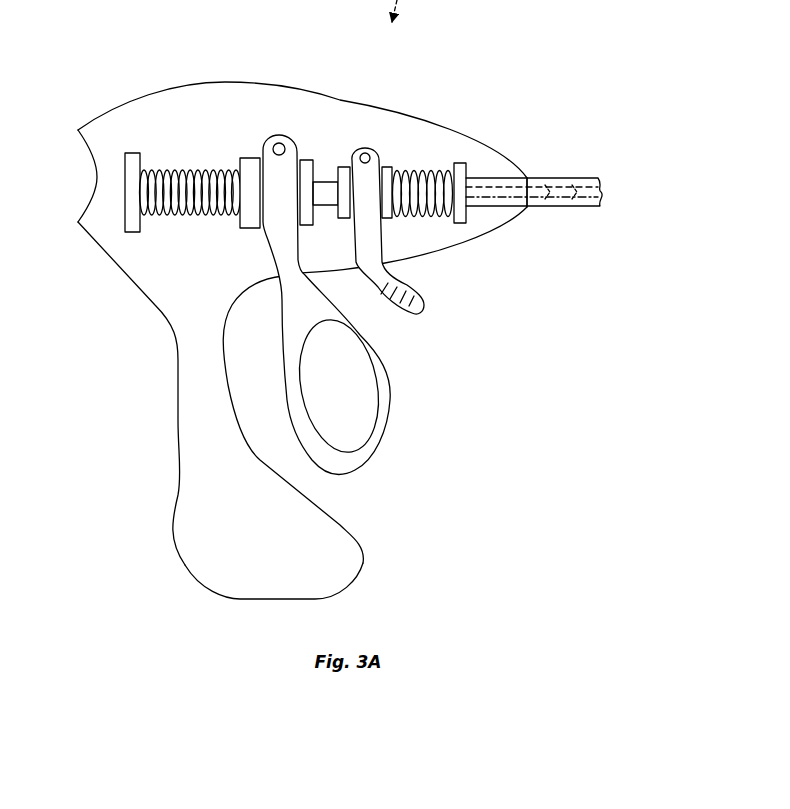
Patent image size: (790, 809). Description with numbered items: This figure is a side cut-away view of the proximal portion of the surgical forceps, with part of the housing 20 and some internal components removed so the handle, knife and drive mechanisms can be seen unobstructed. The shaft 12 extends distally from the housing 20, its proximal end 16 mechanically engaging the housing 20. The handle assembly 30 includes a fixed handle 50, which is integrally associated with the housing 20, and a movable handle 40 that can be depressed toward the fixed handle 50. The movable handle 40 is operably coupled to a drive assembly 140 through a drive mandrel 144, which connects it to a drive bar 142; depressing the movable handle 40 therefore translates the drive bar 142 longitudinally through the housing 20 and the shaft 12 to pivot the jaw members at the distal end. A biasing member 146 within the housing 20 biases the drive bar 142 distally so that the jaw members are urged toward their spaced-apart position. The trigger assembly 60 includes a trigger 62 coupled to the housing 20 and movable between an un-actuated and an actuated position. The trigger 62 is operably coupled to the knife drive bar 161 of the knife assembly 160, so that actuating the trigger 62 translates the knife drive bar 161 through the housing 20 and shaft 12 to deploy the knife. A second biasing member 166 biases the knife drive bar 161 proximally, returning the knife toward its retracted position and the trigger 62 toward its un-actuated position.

The shaft 12 is at (586, 208).
The proximal end 16 is at (541, 208).
The housing 20 is at (262, 82).
The handle assembly 30 is at (358, 487).
The movable handle 40 is at (393, 398).
The fixed handle 50 is at (353, 580).
The trigger assembly 60 is at (430, 248).
The trigger 62 is at (408, 316).
The drive assembly 140 is at (307, 141).
The drive bar 142 is at (563, 178).
The drive mandrel 144 is at (252, 229).
The biasing member 146 is at (195, 168).
The knife assembly 160 is at (424, 192).
The knife drive bar 161 is at (545, 178).
The biasing member 166 is at (425, 168).